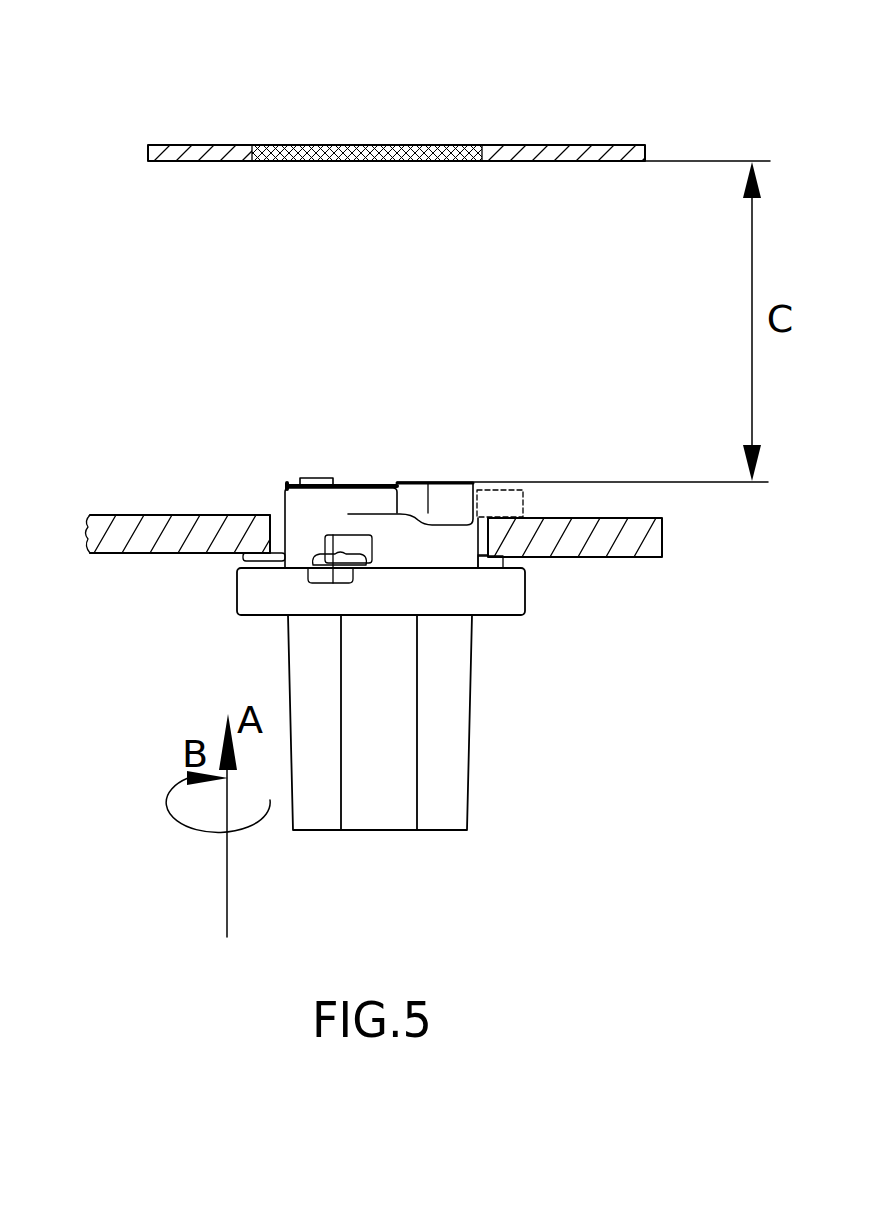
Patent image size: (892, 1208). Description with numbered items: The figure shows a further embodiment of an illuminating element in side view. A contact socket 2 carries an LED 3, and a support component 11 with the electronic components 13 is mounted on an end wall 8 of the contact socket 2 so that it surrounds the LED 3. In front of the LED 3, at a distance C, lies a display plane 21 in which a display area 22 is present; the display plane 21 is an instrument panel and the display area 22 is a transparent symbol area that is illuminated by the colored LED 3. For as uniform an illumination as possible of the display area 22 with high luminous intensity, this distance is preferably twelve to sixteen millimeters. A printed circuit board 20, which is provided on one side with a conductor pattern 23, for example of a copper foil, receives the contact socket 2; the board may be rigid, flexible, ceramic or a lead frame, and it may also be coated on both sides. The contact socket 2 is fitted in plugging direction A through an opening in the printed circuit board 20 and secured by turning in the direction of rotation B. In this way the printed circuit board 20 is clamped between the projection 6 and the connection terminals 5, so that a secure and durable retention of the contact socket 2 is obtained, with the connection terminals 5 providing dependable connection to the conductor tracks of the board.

The contact socket 2 is at (515, 740).
The LED 3 is at (408, 490).
The connection terminals 5 is at (257, 556).
The projections 6 is at (509, 499).
The end wall 8 is at (358, 487).
The support component 11 is at (293, 486).
The electronic components 13 is at (305, 477).
The printed circuit board 20 is at (642, 540).
The display plane 21 is at (210, 157).
The display area 22 is at (275, 157).
The conductor pattern 23 is at (278, 532).